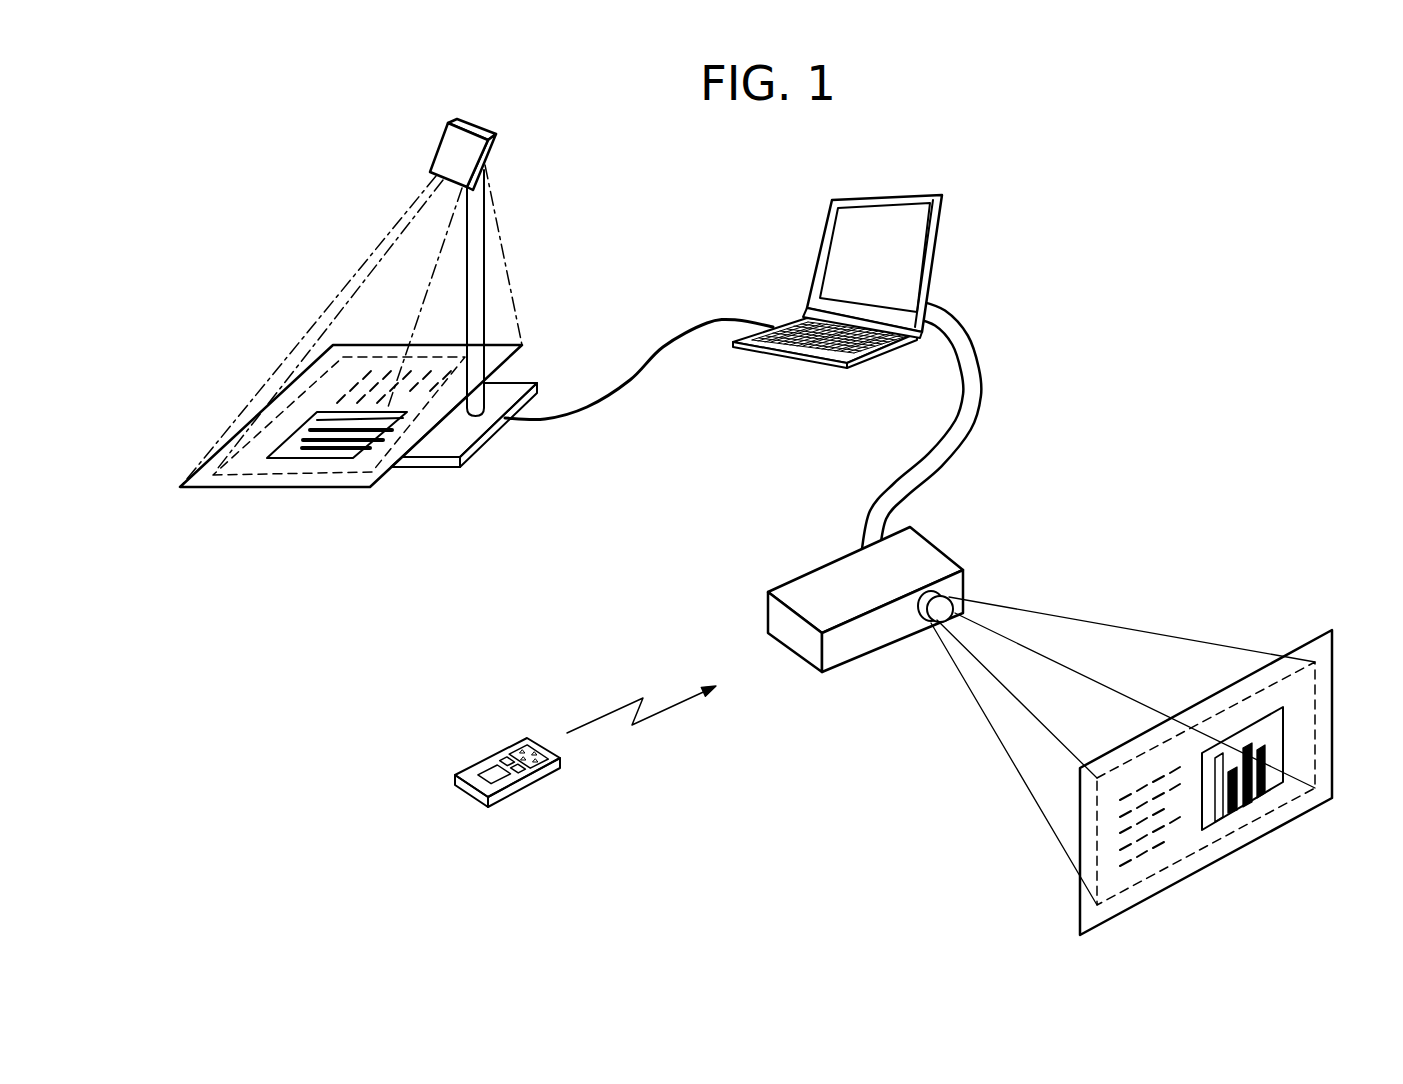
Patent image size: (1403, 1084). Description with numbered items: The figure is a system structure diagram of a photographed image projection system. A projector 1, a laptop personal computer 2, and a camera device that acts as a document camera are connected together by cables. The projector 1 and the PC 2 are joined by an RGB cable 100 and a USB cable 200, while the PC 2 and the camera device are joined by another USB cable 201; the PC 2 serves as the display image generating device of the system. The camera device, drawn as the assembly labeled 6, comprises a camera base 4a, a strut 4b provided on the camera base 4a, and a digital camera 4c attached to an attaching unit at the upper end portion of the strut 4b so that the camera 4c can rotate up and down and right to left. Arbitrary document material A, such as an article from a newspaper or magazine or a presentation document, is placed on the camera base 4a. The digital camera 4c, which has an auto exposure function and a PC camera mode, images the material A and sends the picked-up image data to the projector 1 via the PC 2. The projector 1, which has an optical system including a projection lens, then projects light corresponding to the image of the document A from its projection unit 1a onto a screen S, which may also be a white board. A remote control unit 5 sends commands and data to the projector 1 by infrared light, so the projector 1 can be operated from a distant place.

The projector 1 is at (1041, 687).
The projection unit 1a is at (927, 625).
The laptop personal computer 2 is at (882, 185).
The camera base 4a is at (472, 455).
The strut 4b is at (476, 278).
The digital camera 4c is at (474, 130).
The remote control unit 5 is at (498, 751).
The document camera 6 is at (402, 298).
The RGB cable 100 is at (980, 377).
The USB cable 200 is at (952, 378).
The USB cable 201 is at (582, 418).
The document material A is at (276, 488).
The screen S is at (1322, 634).